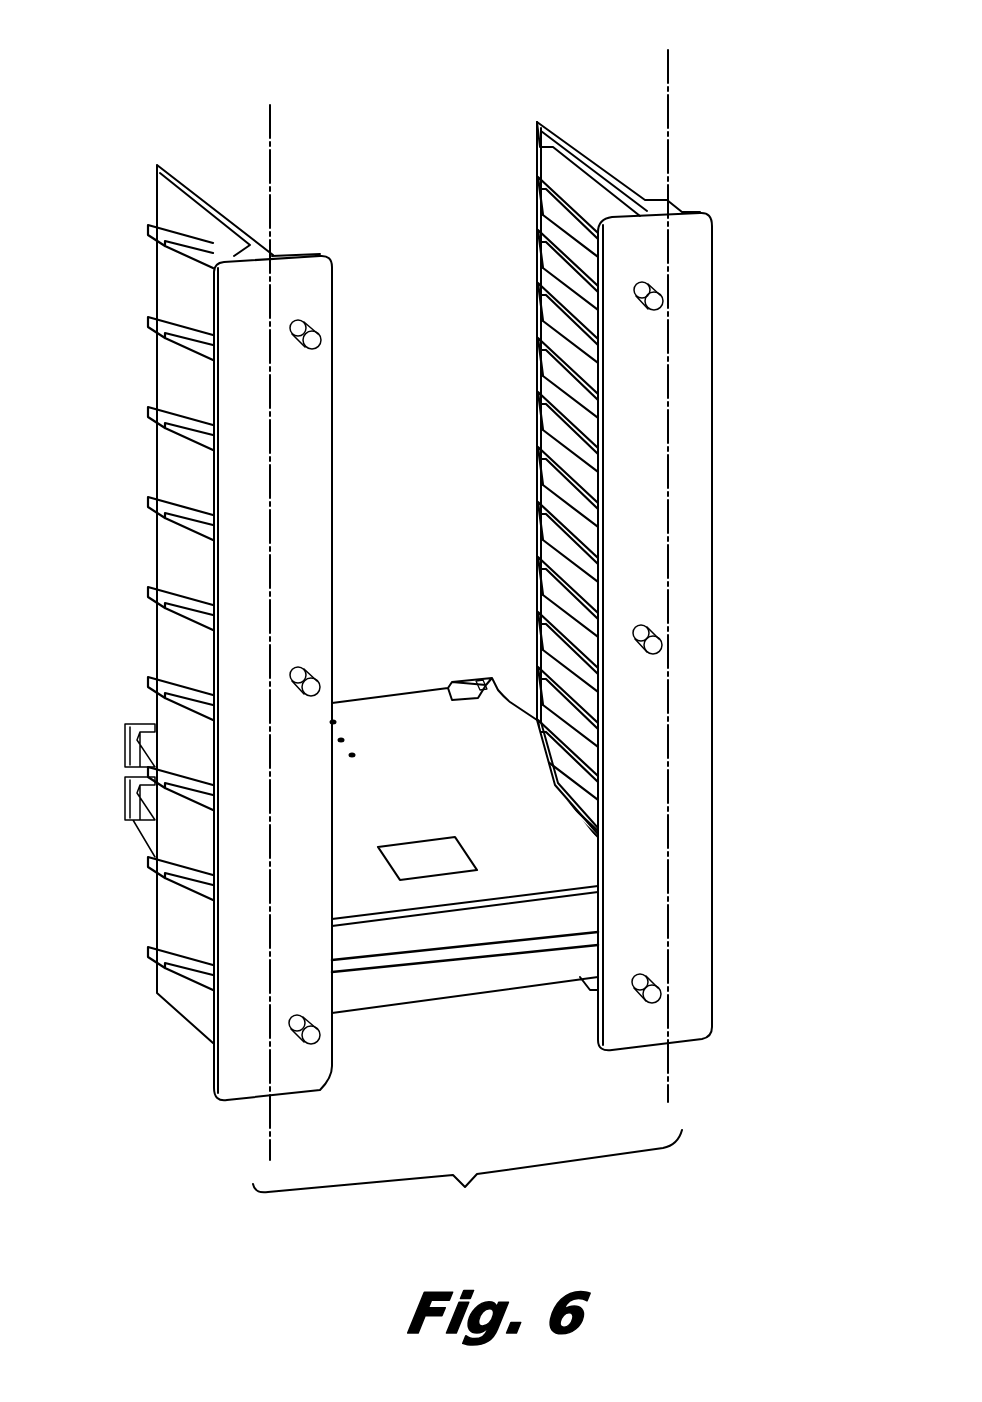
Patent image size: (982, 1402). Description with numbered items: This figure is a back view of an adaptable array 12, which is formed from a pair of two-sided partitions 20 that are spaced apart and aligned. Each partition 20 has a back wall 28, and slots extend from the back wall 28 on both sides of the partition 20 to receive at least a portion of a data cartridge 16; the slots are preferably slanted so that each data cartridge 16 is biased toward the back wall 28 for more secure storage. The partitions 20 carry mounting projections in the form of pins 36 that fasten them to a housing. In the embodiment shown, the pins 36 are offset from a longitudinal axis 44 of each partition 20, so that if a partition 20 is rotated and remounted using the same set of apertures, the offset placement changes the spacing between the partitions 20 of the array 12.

The array 12 is at (433, 619).
The data cartridge 16 is at (408, 992).
The partition 20 is at (433, 588).
The back wall 28 is at (307, 440).
The pin 36 is at (287, 682).
The longitudinal axis 44 is at (272, 125).